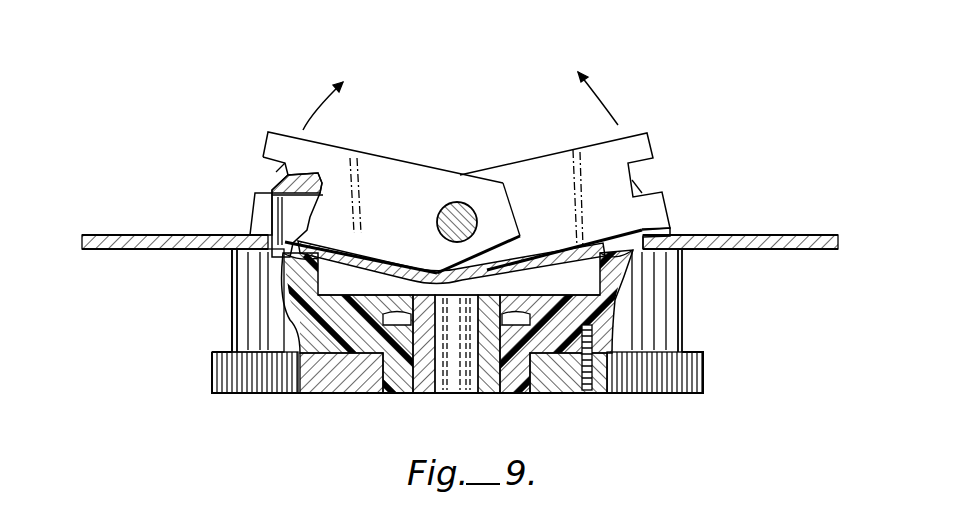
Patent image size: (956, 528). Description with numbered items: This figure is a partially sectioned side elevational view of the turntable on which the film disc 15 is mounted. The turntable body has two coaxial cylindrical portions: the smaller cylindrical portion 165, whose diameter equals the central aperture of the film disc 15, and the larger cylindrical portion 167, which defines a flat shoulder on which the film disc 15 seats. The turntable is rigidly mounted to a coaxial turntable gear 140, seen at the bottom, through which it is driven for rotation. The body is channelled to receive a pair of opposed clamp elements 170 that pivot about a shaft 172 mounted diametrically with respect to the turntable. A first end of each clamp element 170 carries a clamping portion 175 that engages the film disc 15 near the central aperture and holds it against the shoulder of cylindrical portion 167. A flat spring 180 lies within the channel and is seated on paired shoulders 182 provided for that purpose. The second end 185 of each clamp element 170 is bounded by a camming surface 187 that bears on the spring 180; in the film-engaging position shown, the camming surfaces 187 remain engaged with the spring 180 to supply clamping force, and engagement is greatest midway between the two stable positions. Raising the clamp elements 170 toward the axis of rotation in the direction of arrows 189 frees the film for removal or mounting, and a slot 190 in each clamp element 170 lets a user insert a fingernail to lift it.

The film disc 15 is at (772, 235).
The turntable gear 140 is at (693, 373).
The cylindrical portion 165 is at (290, 203).
The cylindrical portion 167 is at (247, 312).
The clamp elements 170 is at (397, 177).
The shaft 172 is at (460, 202).
The clamping portion 175 is at (257, 219).
The flat spring 180 is at (485, 300).
The shoulders 182 is at (300, 278).
The second end 185 is at (495, 240).
The camming surface 187 is at (482, 253).
The arrows 189 is at (312, 108).
The slot 190 is at (264, 164).